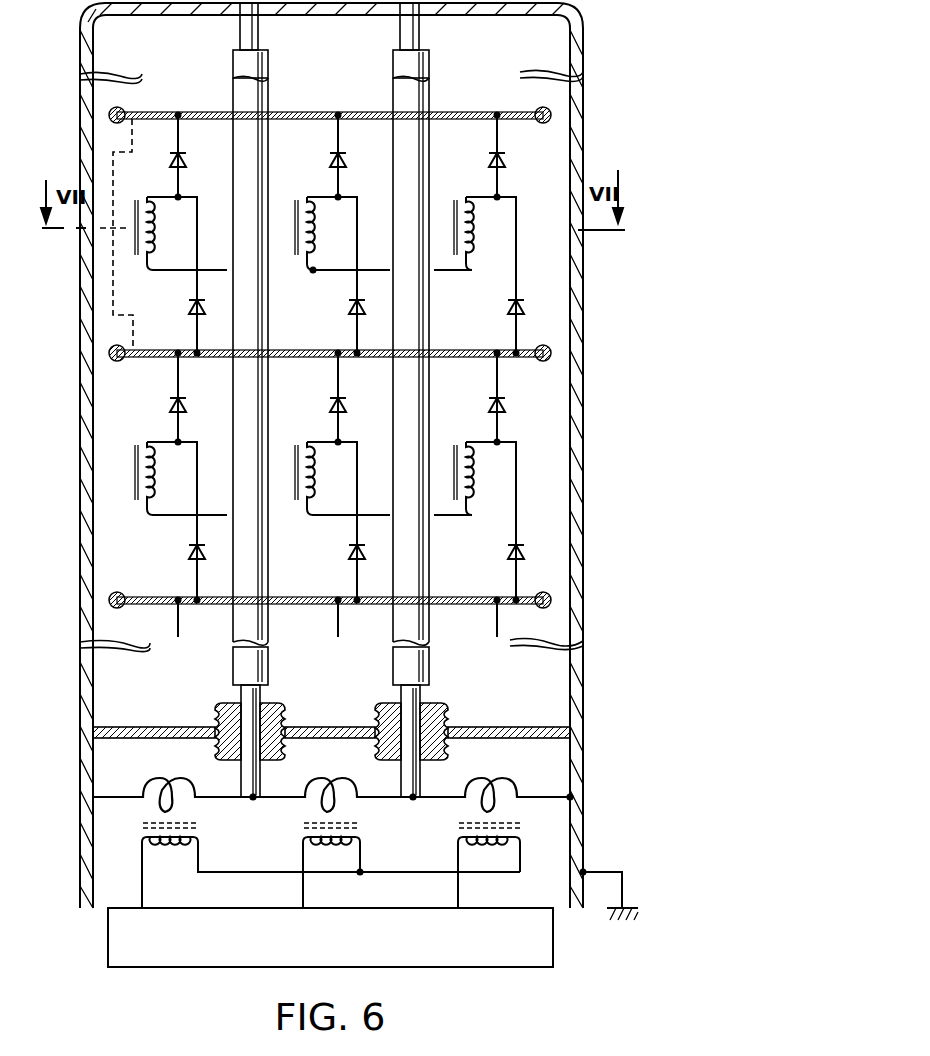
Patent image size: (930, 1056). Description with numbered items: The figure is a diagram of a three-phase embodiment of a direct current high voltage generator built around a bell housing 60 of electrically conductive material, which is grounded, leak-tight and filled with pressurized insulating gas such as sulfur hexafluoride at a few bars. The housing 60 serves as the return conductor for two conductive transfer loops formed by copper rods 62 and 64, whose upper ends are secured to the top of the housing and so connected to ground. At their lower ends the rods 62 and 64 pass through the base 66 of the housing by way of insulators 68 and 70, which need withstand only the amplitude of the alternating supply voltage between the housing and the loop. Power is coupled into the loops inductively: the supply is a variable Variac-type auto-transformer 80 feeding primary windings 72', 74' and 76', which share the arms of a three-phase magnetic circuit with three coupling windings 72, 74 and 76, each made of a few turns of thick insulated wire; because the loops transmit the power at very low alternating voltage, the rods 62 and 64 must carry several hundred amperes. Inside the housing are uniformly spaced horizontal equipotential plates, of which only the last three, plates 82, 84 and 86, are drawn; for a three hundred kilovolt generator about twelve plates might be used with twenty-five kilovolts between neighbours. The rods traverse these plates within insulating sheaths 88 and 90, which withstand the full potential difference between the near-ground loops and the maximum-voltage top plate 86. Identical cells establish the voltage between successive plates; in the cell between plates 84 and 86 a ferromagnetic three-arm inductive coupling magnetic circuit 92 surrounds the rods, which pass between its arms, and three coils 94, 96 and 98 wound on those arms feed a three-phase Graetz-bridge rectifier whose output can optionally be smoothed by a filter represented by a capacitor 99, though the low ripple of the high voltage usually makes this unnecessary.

The bell housing 60 is at (583, 455).
The conductive rod 62 is at (248, 702).
The conductive rod 64 is at (408, 702).
The base of the bell housing 66 is at (515, 731).
The insulator 68 is at (285, 722).
The insulator 70 is at (446, 718).
The winding 72 is at (171, 801).
The winding 74 is at (330, 803).
The winding 76 is at (412, 805).
The primary winding 72' is at (311, 865).
The primary winding 74' is at (307, 865).
The primary winding 76' is at (467, 865).
The variable transformer 80 is at (331, 953).
The equipotential plate 82 is at (150, 596).
The equipotential plate 84 is at (140, 358).
The equipotential plate 86 is at (483, 111).
The insulating sheath 88 is at (243, 95).
The insulating sheath 90 is at (407, 90).
The inductive coupling magnetic circuit 92 is at (138, 210).
The coil 94 is at (156, 262).
The coil 96 is at (316, 262).
The coil 98 is at (474, 262).
The capacitor 99 is at (110, 230).